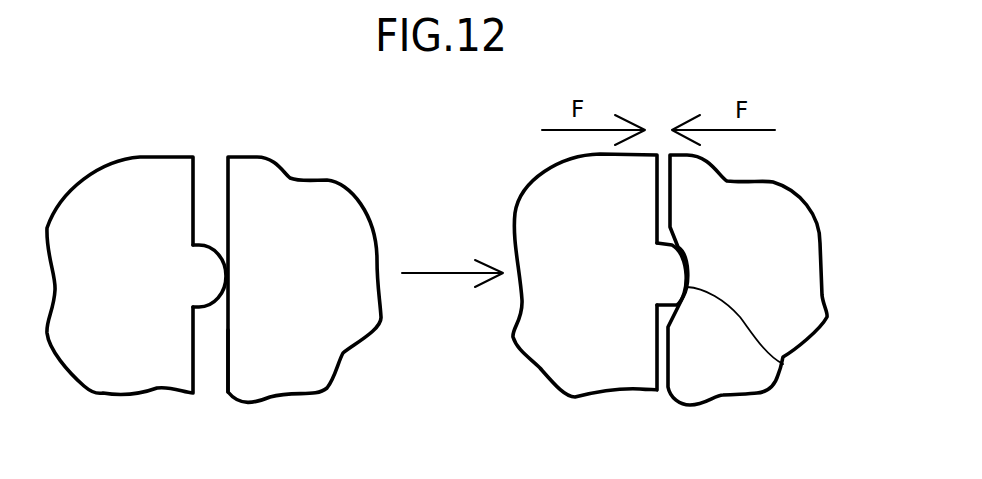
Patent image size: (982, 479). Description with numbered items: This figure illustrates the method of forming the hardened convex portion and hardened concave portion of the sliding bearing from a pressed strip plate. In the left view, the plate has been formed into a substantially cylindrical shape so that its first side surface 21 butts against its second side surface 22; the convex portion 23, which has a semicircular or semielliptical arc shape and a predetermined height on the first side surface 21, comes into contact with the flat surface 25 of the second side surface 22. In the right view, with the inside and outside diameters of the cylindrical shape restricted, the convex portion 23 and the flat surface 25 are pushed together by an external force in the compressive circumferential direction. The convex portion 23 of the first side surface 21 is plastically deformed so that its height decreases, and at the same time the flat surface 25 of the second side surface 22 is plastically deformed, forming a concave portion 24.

The first side surface 21 is at (191, 187).
The second side surface 22 is at (226, 187).
The convex portion 23 is at (203, 275).
The concave portion 24 is at (783, 364).
The flat surface 25 is at (226, 366).